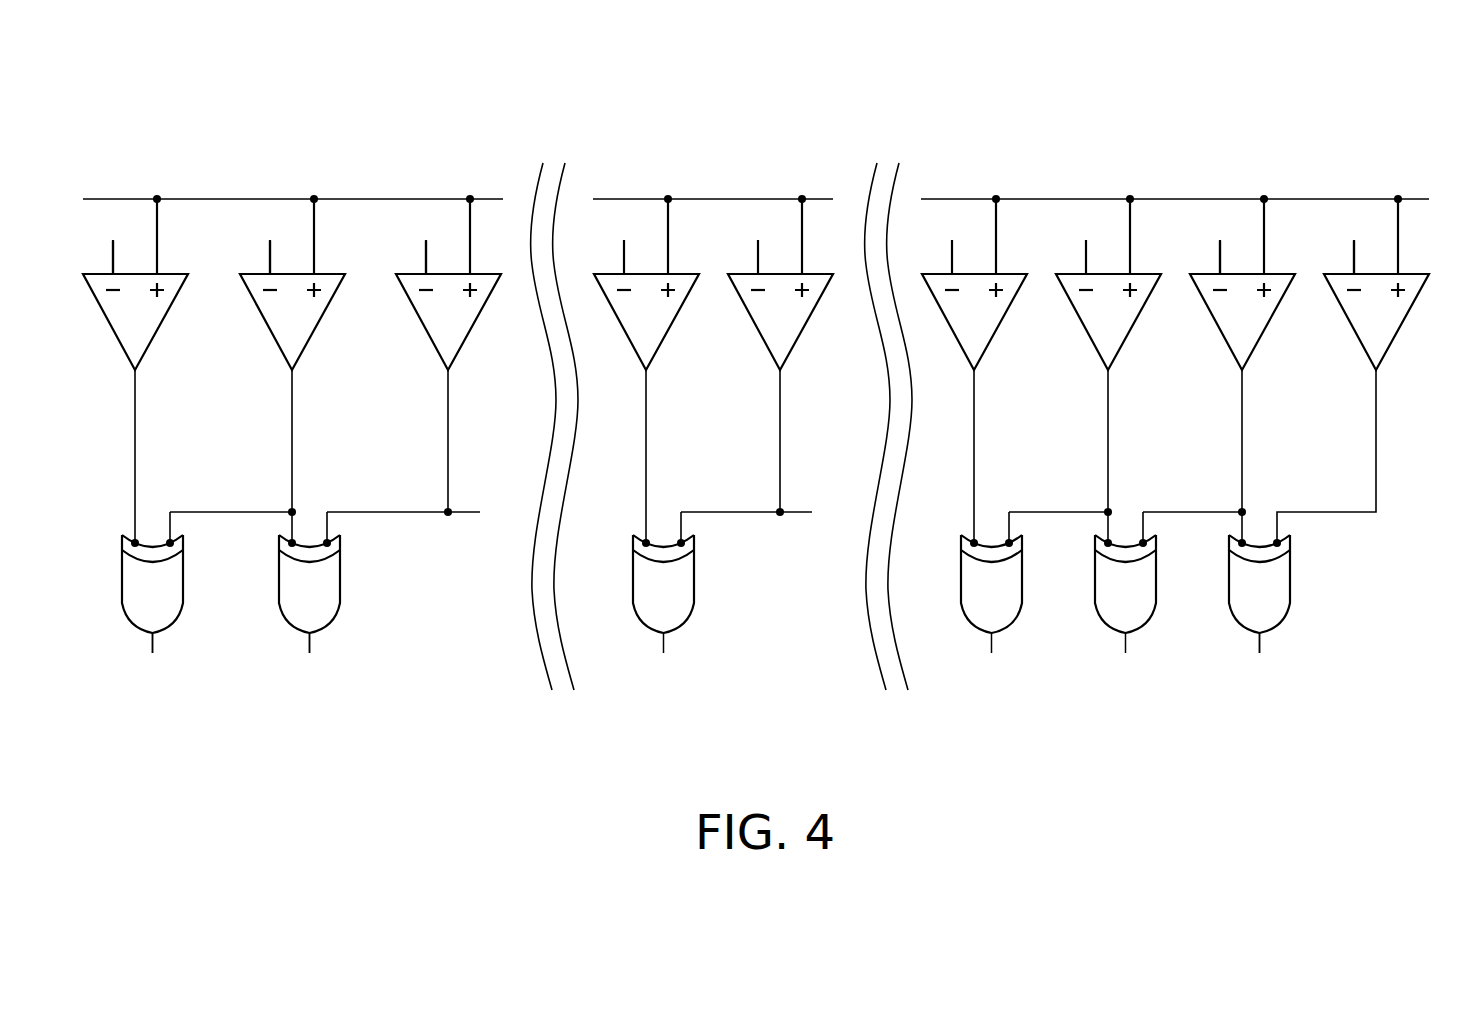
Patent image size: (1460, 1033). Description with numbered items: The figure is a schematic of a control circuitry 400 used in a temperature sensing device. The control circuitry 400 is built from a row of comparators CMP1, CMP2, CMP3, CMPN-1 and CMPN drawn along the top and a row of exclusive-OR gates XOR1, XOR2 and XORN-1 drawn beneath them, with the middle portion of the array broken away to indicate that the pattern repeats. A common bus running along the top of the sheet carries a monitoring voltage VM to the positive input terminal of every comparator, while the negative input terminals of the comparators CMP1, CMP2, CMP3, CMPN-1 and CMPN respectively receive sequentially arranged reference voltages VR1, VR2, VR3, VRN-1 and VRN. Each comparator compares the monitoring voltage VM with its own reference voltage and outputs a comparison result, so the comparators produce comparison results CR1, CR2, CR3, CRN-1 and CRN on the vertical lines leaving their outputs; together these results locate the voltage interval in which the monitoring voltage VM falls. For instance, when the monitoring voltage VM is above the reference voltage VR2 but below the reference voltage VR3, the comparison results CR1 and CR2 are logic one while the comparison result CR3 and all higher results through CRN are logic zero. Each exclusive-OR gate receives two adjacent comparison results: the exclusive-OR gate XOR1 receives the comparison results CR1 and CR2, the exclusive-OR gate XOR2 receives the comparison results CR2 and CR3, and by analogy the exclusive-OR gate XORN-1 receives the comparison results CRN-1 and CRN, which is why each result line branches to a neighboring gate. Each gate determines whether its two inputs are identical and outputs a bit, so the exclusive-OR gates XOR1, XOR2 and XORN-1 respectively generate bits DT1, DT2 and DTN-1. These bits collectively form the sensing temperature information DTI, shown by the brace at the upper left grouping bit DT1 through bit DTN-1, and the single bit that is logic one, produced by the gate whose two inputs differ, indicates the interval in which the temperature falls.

The control circuitry 400 is at (1423, 749).
The comparator CMP1 is at (161, 322).
The comparator CMP2 is at (318, 322).
The comparator CMP3 is at (474, 322).
The comparator CMPN-1 is at (1268, 322).
The comparator CMPN is at (1402, 322).
The exclusive-OR gate XOR1 is at (183, 587).
The exclusive-OR gate XOR2 is at (340, 587).
The exclusive-OR gate XORN-1 is at (1290, 587).
The reference voltage VR1 is at (115, 240).
The reference voltage VR2 is at (270, 240).
The reference voltage VR3 is at (426, 240).
The reference voltage VRN-1 is at (1221, 240).
The reference voltage VRN is at (1354, 240).
The monitoring voltage VM is at (756, 186).
The comparison result CR1 is at (160, 456).
The comparison result CR2 is at (256, 456).
The comparison result CR3 is at (412, 456).
The comparison result CRN-1 is at (1284, 456).
The comparison result CRN is at (1351, 456).
The bit of sensing temperature information DT1 is at (153, 664).
The bit of sensing temperature information DT2 is at (310, 664).
The bit of sensing temperature information DTN-1 is at (1261, 664).
The sensing temperature information DTI is at (204, 35).